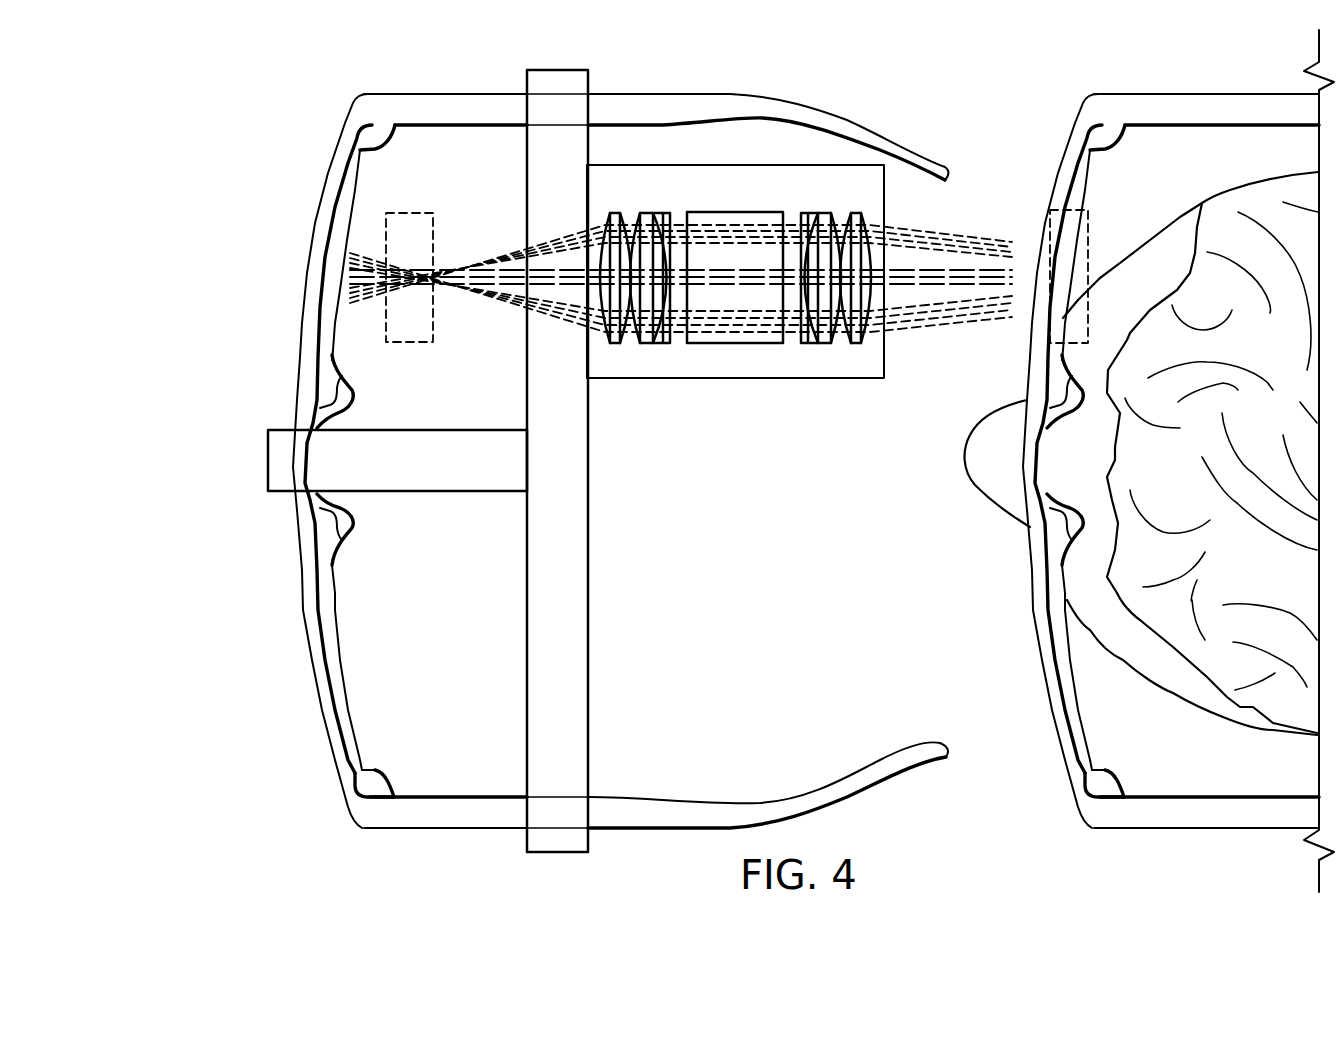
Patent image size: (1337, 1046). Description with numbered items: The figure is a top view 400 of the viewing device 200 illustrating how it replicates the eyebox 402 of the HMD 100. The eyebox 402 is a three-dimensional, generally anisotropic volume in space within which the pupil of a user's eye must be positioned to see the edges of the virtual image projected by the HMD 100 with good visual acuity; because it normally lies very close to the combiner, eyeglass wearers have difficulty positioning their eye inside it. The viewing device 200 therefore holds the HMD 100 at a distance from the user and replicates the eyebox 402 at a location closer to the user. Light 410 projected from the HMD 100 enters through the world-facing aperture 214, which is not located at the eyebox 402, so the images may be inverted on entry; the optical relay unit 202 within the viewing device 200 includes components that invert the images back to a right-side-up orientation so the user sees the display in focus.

The top view 400 is at (252, 175).
The HMD 100 is at (302, 733).
The viewing device 200 is at (594, 582).
The optical relay unit 202 is at (733, 380).
The world-facing aperture 214 is at (516, 322).
The light 410 is at (490, 246).
The eyebox 402 is at (418, 212).